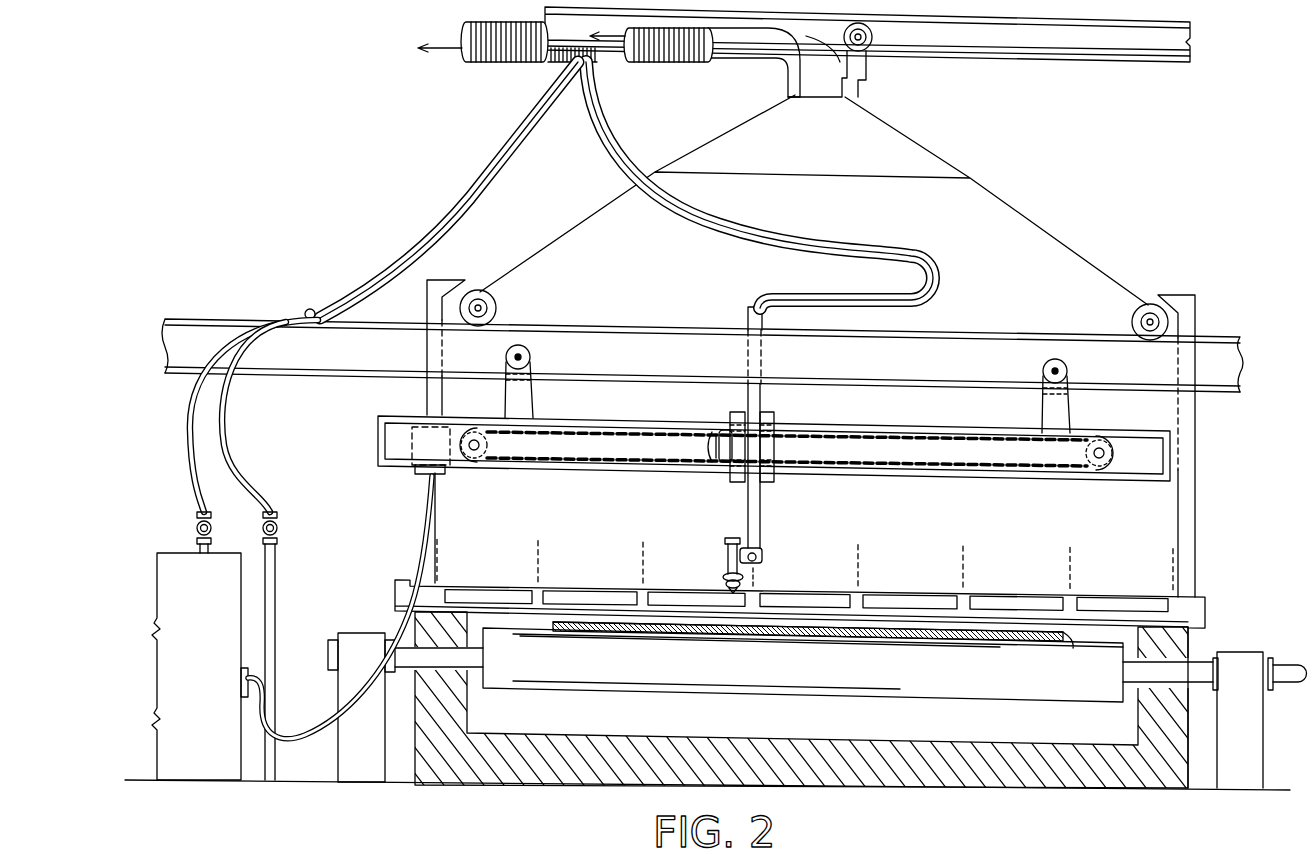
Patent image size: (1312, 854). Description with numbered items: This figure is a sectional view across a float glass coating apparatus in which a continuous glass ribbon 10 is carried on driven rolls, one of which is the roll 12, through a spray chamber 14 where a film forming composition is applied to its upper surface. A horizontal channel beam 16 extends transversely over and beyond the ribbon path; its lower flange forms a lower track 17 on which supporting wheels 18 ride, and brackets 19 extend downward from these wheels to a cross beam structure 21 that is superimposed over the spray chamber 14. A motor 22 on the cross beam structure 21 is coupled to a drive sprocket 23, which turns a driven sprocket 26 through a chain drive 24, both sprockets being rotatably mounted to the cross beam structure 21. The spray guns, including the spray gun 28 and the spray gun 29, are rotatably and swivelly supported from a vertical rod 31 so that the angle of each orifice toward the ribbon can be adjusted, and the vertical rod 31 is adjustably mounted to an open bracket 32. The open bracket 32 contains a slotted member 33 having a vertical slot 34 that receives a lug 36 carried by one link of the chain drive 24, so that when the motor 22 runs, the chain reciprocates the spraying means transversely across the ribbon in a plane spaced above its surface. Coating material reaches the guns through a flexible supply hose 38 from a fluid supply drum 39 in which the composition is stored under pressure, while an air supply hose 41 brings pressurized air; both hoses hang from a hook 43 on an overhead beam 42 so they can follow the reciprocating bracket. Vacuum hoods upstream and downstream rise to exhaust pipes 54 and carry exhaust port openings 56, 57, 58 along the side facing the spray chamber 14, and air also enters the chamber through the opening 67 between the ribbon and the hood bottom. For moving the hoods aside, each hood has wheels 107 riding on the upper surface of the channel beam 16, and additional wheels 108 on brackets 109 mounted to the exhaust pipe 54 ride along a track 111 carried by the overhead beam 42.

The continuous glass ribbon 10 is at (818, 649).
The roll 12 is at (722, 672).
The spray chamber 14 is at (800, 573).
The horizontal channel beam 16 is at (732, 358).
The lower track 17 is at (1232, 380).
The supporting wheels 18 is at (530, 358).
The brackets 19 is at (528, 397).
The cross beam structure 21 is at (804, 461).
The motor 22 is at (418, 476).
The drive sprocket 23 is at (475, 462).
The chain drive 24 is at (560, 466).
The driven sprocket 26 is at (1102, 469).
The spray gun 28 is at (732, 540).
The spray gun 29 is at (723, 580).
The vertical rod 31 is at (762, 500).
The open bracket 32 is at (788, 432).
The slotted member 33 is at (710, 455).
The vertical slot 34 is at (705, 430).
The lug 36 is at (728, 470).
The flexible supply hose 38 is at (534, 421).
The fluid supply drum 39 is at (210, 661).
The air supply hose 41 is at (262, 462).
The overhead beam 42 is at (895, 47).
The hook 43 is at (565, 65).
The exhaust pipes 54 is at (740, 62).
The exhaust port opening 56 is at (488, 597).
The exhaust port opening 57 is at (590, 598).
The exhaust port opening 58 is at (696, 599).
The opening 67 is at (900, 630).
The wheels 107 is at (497, 298).
The additional wheels 108 is at (870, 52).
The brackets 109 is at (866, 80).
The track 111 is at (1002, 44).